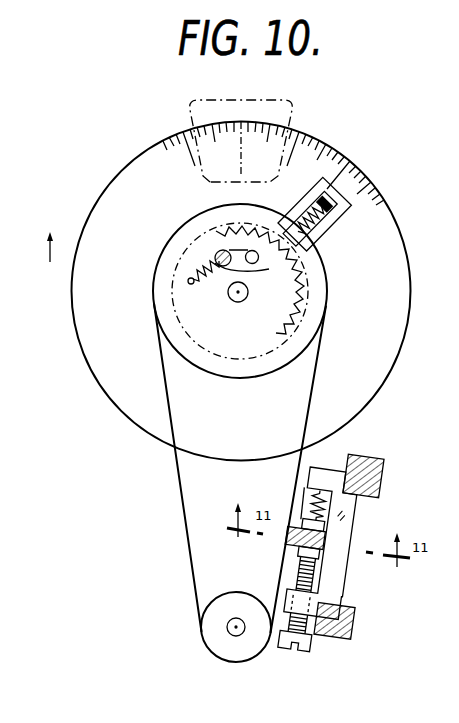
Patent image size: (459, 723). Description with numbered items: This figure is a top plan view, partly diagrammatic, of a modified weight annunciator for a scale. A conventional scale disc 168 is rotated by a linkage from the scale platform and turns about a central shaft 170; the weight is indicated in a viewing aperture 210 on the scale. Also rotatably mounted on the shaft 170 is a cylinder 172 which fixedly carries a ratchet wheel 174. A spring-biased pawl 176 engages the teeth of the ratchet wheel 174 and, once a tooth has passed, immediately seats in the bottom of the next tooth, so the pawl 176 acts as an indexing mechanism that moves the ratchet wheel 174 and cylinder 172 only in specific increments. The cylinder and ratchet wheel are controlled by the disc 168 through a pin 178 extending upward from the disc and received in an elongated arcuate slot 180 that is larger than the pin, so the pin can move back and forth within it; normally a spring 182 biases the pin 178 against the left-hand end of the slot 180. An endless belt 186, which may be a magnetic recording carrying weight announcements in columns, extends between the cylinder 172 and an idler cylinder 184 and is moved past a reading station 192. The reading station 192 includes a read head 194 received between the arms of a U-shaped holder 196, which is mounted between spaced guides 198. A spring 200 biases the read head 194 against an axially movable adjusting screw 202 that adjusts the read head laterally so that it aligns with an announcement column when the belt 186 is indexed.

The scale disc 168 is at (398, 321).
The central shaft 170 is at (228, 290).
The cylinder 172 is at (320, 277).
The ratchet wheel 174 is at (259, 229).
The spring-biased pawl 176 is at (353, 204).
The pin 178 is at (219, 250).
The elongated arcuate slot 180 is at (256, 290).
The spring 182 is at (192, 277).
The idler cylinder 184 is at (210, 635).
The endless belt 186 is at (180, 503).
The reading station 192 is at (329, 541).
The read head 194 is at (323, 548).
The U-shaped holder 196 is at (345, 515).
The spaced guides 198 is at (370, 447).
The spring 200 is at (313, 503).
The adjusting screw 202 is at (302, 581).
The viewing aperture 210 is at (260, 100).